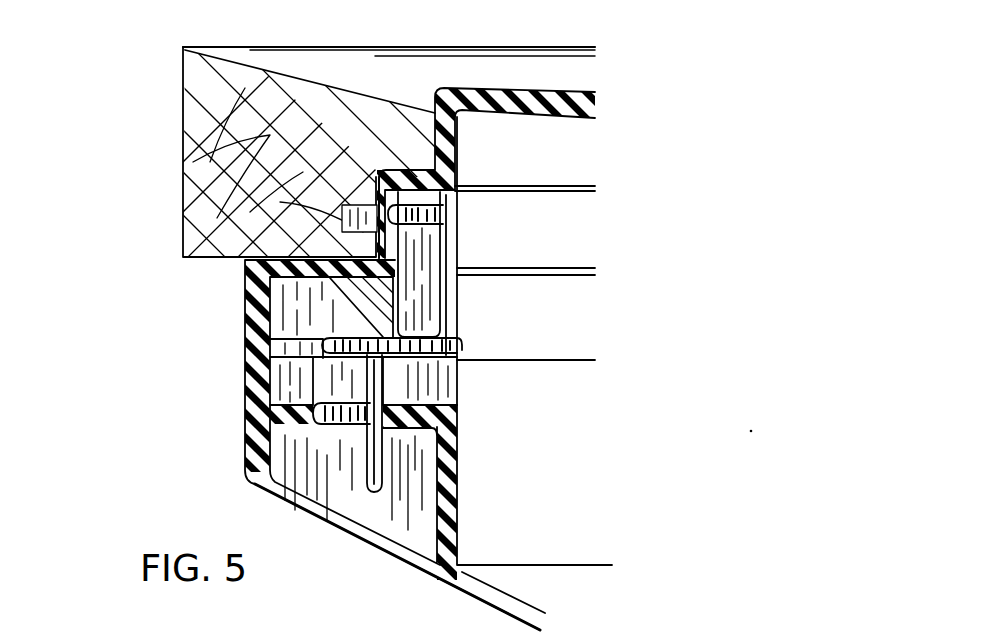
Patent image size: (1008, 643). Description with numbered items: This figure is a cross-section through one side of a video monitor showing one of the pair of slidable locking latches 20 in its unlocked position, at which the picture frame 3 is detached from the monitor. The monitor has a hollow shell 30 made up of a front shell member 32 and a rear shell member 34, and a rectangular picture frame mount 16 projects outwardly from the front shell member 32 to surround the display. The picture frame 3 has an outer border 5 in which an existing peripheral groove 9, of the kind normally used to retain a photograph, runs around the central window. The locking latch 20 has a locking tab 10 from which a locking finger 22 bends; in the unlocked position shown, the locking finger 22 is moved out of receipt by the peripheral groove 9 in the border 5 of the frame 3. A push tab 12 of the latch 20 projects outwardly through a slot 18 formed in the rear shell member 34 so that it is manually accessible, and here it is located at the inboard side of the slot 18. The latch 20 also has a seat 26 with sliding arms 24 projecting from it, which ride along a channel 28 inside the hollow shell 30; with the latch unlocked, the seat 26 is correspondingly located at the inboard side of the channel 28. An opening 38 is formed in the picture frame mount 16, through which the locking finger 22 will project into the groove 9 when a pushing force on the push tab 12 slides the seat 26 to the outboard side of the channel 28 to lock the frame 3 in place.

The picture frame 3 is at (172, 128).
The border 5 is at (357, 68).
The peripheral groove 9 is at (342, 214).
The locking tab 10 is at (450, 248).
The push tab 12 is at (377, 470).
The picture frame mount 16 is at (553, 100).
The slot 18 is at (357, 428).
The slidable locking latch 20 is at (466, 313).
The locking finger 22 is at (445, 208).
The sliding arms 24 is at (327, 335).
The seat 26 is at (428, 352).
The channel 28 is at (256, 425).
The hollow shell 30 is at (470, 389).
The front shell member 32 is at (258, 342).
The rear shell member 34 is at (308, 360).
The opening 38 is at (392, 258).